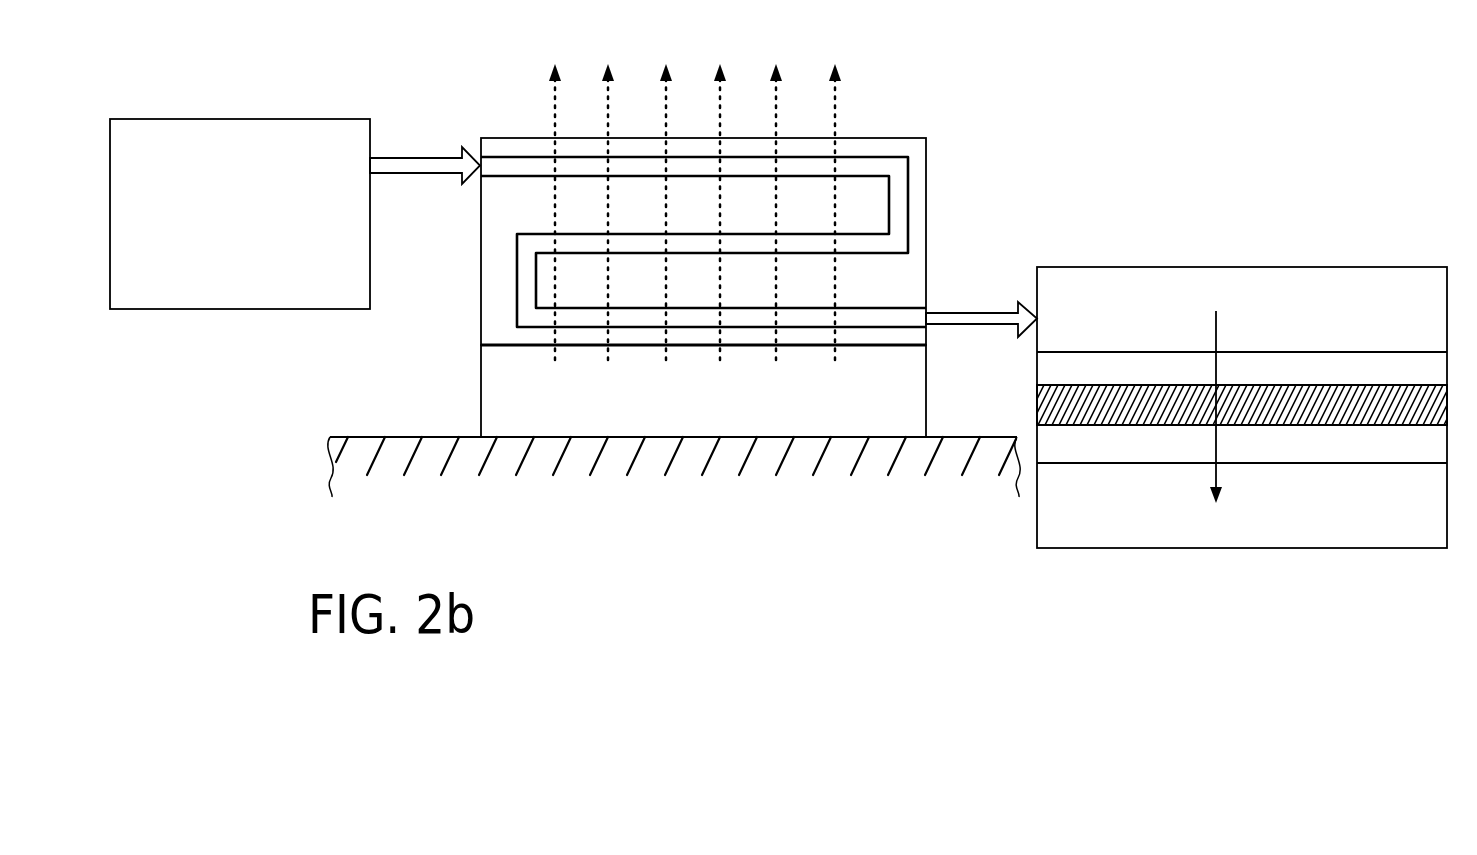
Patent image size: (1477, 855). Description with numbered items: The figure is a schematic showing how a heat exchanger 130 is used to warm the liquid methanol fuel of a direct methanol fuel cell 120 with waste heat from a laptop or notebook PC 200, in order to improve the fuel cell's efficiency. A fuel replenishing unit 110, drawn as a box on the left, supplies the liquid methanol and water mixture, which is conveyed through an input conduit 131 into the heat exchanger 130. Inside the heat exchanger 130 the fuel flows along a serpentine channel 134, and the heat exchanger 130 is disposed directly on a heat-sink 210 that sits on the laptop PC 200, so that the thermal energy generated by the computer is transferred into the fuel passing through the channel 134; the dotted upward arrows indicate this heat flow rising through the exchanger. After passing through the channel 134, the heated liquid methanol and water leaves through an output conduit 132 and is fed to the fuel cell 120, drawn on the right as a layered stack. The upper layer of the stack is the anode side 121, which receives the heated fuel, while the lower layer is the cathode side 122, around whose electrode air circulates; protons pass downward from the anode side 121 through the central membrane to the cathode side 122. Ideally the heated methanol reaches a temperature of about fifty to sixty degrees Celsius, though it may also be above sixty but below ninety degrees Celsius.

The fuel replenishing unit 110 is at (258, 226).
The input conduit 131 is at (415, 165).
The heat exchanger 130 is at (916, 200).
The channel 134 is at (868, 165).
The output conduit 132 is at (963, 319).
The heat-sink 210 is at (503, 405).
The laptop or notebook PC 200 is at (701, 513).
The DMFC fuel cell 120 is at (1107, 580).
The anode side 121 is at (1322, 280).
The cathode side 122 is at (1276, 534).